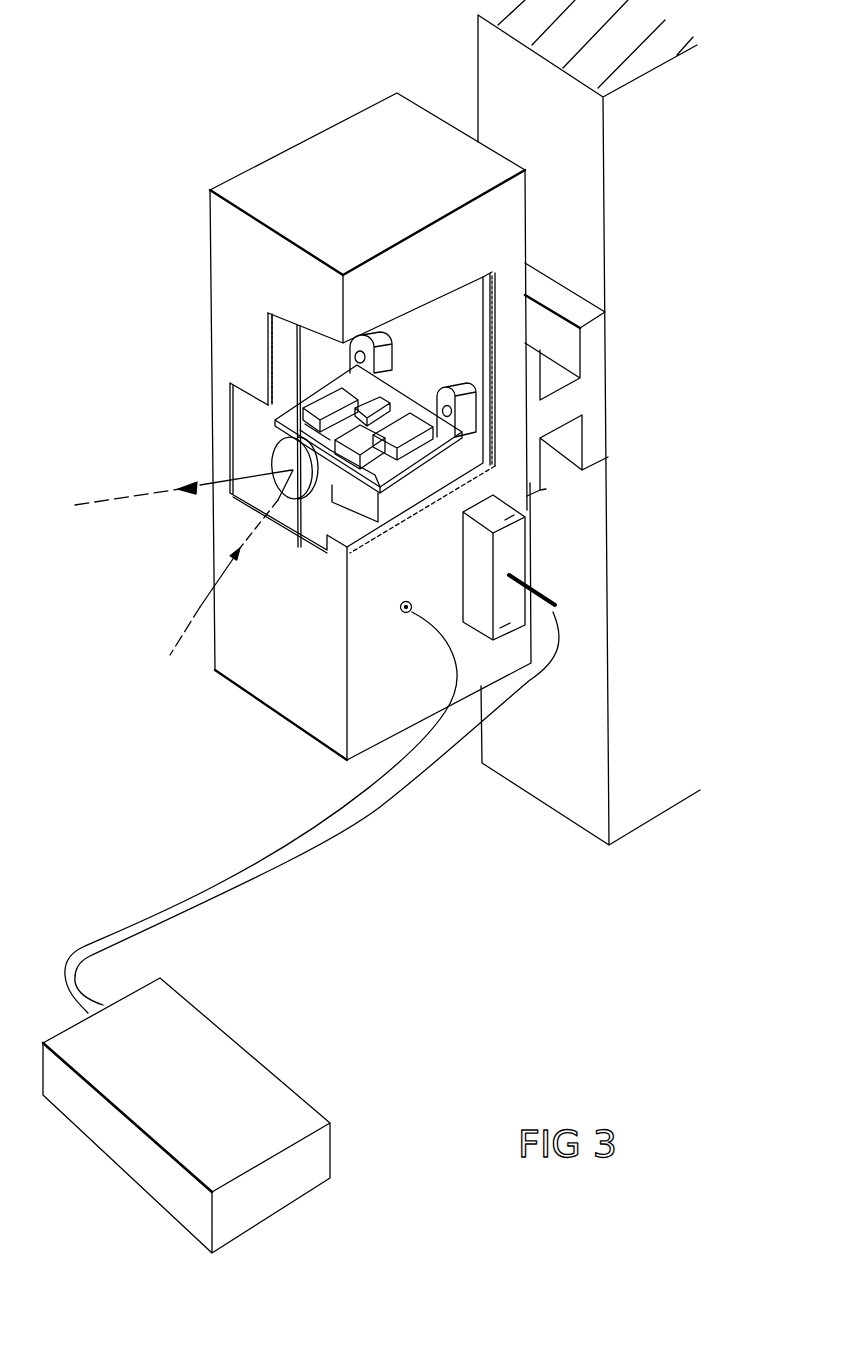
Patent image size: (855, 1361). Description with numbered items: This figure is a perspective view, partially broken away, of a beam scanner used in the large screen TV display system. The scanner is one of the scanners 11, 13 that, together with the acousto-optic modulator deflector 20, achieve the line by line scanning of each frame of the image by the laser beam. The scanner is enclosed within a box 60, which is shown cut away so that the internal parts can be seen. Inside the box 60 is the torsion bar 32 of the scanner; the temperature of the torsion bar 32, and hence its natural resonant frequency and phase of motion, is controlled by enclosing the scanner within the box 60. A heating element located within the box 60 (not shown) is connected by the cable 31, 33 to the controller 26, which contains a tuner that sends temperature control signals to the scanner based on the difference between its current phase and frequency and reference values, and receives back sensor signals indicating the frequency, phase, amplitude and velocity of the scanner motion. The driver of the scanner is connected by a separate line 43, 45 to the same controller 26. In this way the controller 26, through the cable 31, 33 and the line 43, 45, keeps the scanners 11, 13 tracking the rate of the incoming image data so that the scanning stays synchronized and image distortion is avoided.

The scanner 11 is at (385, 495).
The scanner 13 is at (443, 327).
The acousto-optic modulator deflector 20 is at (277, 466).
The controller 26 is at (292, 1083).
The cable 31 is at (317, 808).
The cable 33 is at (258, 882).
The torsion bar 32 is at (302, 513).
The line 43 is at (261, 812).
The line 45 is at (219, 881).
The box 60 is at (265, 160).